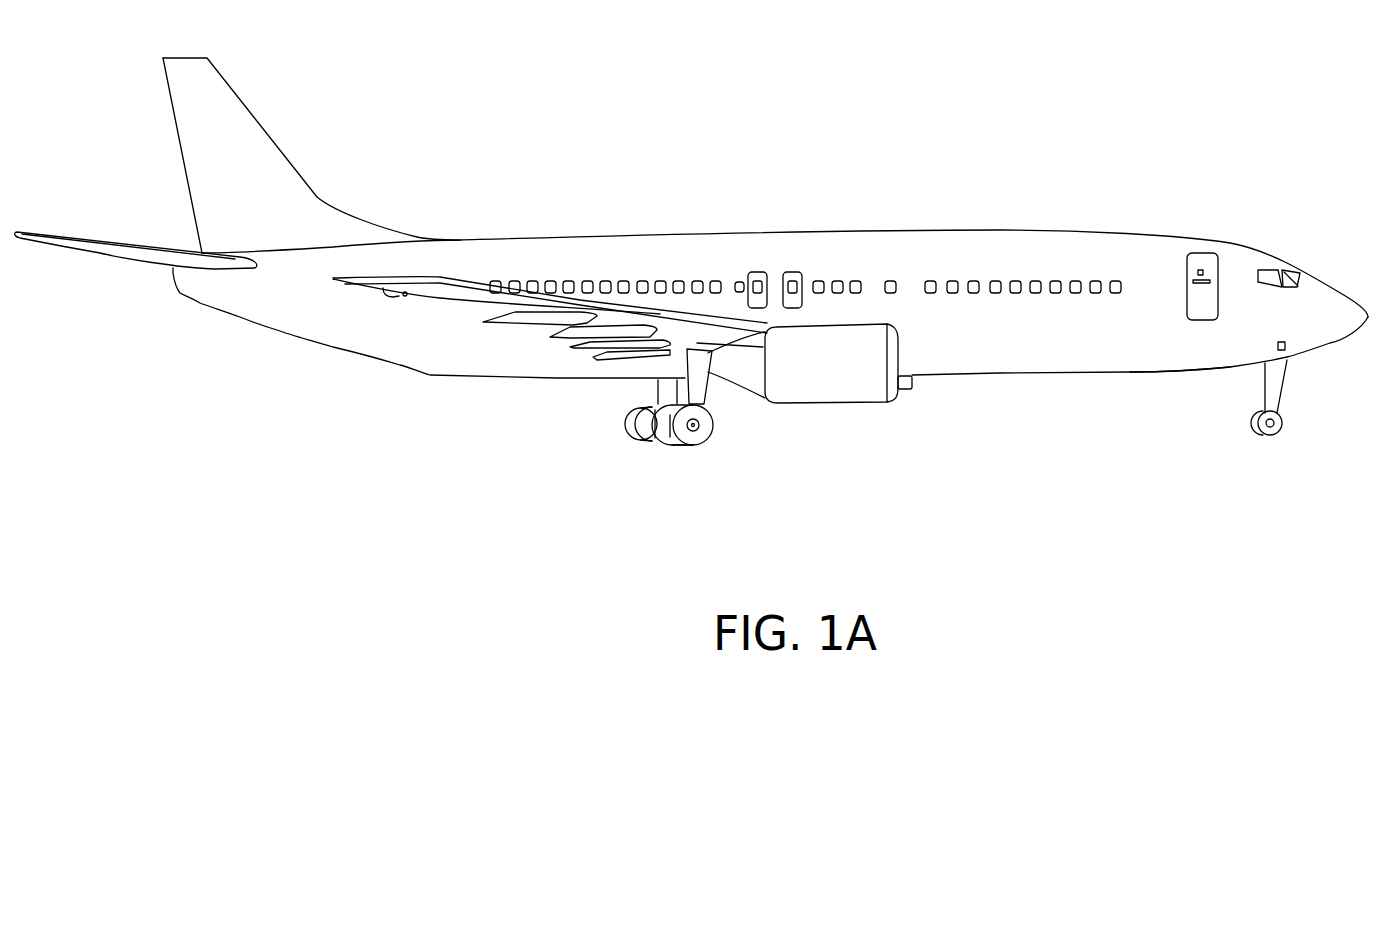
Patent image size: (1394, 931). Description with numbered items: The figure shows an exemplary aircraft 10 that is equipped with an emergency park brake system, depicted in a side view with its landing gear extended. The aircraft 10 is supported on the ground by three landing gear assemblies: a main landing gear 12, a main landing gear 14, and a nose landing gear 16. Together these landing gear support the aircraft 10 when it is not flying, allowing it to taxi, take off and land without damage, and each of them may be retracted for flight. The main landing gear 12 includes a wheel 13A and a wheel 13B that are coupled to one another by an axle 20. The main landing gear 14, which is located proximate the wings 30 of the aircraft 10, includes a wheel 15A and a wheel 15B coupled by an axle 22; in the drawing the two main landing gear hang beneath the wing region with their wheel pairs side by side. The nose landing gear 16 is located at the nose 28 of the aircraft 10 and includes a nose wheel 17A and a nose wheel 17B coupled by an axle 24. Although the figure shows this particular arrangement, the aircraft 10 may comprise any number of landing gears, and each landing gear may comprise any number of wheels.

The aircraft 10 is at (898, 117).
The main landing gear 12 is at (642, 397).
The wheel 13A is at (652, 407).
The wheel 13B is at (653, 437).
The main landing gear 14 is at (724, 444).
The wheel 15A is at (707, 420).
The wheel 15B is at (670, 446).
The nose landing gear 16 is at (1314, 406).
The nose wheel 17A is at (1255, 427).
The nose wheel 17B is at (1280, 423).
The axle 20 is at (640, 427).
The axle 22 is at (694, 431).
The axle 24 is at (1277, 437).
The nose 28 is at (1255, 370).
The wings 30 is at (763, 347).